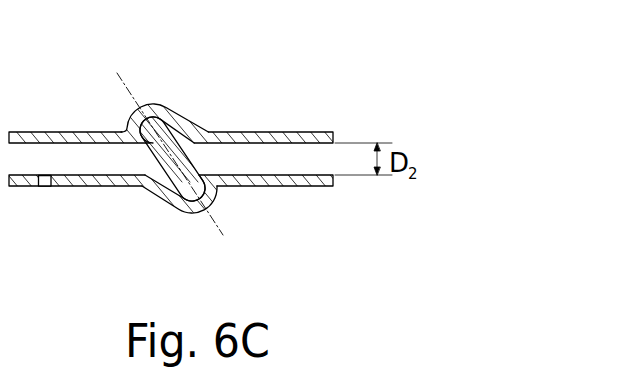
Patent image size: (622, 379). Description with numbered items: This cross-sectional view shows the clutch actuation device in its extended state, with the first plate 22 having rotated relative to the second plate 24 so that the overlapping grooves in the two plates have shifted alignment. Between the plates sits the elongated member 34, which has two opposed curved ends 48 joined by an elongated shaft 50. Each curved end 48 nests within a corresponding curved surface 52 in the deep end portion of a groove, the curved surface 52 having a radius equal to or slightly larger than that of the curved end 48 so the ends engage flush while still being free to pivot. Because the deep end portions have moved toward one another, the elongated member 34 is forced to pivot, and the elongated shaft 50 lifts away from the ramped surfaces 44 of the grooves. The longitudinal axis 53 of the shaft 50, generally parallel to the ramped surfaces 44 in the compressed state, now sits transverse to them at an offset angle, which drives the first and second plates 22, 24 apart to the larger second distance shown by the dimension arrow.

The first plate 22 is at (313, 133).
The second plate 24 is at (307, 187).
The elongated member 34 is at (187, 141).
The ramped surfaces 44 is at (176, 188).
The curved ends 48 is at (132, 118).
The elongated shaft 50 is at (172, 120).
The curved surface 52 is at (200, 211).
The longitudinal axis 53 is at (119, 75).